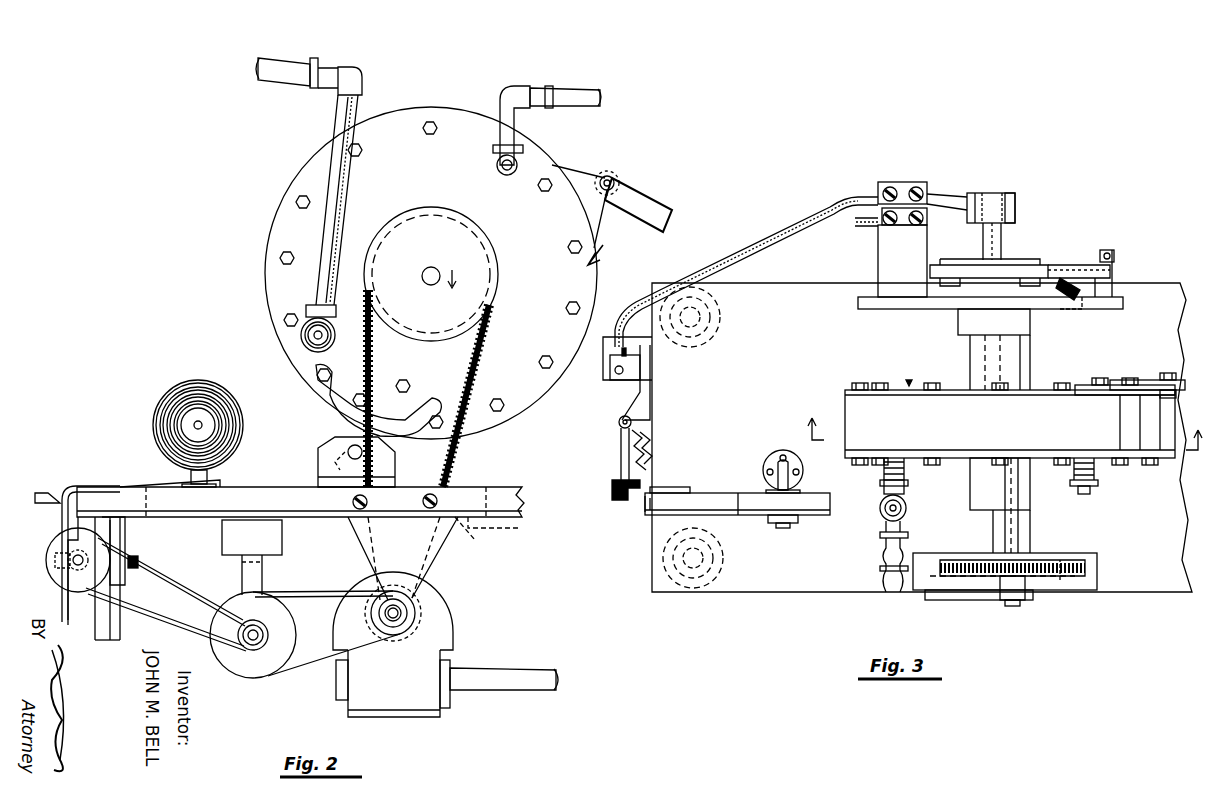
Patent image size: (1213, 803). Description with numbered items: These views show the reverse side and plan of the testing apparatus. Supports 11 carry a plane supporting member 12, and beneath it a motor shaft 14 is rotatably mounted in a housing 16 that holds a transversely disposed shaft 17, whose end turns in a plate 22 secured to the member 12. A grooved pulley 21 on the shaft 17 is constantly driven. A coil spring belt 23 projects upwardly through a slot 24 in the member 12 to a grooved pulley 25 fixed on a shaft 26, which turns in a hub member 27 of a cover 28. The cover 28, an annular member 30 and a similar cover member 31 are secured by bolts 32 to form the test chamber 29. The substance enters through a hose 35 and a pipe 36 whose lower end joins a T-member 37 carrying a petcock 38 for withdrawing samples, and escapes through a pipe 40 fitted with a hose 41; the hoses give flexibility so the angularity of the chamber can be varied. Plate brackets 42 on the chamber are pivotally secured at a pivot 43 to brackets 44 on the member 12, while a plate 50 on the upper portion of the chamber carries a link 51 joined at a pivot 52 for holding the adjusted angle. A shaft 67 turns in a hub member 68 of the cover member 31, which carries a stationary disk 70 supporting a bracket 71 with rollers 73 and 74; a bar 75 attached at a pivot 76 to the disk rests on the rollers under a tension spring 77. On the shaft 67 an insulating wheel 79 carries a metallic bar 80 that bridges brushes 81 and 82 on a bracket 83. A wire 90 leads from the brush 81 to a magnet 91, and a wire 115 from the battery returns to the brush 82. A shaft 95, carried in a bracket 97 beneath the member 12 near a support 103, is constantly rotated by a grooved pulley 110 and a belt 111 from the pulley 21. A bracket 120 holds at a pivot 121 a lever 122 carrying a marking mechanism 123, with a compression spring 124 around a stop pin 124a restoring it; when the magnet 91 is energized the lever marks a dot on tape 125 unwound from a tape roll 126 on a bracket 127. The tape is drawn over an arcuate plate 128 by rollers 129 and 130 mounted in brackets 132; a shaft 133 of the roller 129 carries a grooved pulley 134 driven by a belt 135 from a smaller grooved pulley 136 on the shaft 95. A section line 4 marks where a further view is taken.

In FIG. 3, the section line 4 is at (1003, 422).
In FIG. 2, the supports 11 is at (96, 634).
In FIG. 3, the supports 11 is at (706, 313).
In FIG. 2, the plane supporting member 12 is at (514, 490).
In FIG. 3, the plane supporting member 12 is at (760, 592).
In FIG. 2, the motor shaft 14 is at (472, 672).
In FIG. 2, the housing 16 is at (450, 622).
In FIG. 2, the transversely disposed shaft 17 is at (394, 598).
In FIG. 3, the transversely disposed shaft 17 is at (968, 600).
In FIG. 2, the grooved pulley 21 is at (404, 622).
In FIG. 2, the plate 22 is at (403, 558).
In FIG. 3, the plate 22 is at (930, 600).
In FIG. 2, the coil spring belt 23 is at (452, 458).
In FIG. 3, the coil spring belt 23 is at (1092, 570).
In FIG. 2, the slot 24 is at (487, 533).
In FIG. 3, the slot 24 is at (1096, 560).
In FIG. 2, the grooved pulley 25 is at (431, 274).
In FIG. 3, the grooved pulley 25 is at (1062, 582).
In FIG. 2, the shaft 26 is at (432, 266).
In FIG. 3, the shaft 26 is at (1000, 506).
In FIG. 3, the hub member 27 is at (1030, 500).
In FIG. 2, the cover 28 is at (431, 273).
In FIG. 3, the cover 28 is at (962, 460).
In FIG. 2, the test chamber 29 is at (611, 253).
In FIG. 3, the test chamber 29 is at (909, 384).
In FIG. 3, the annular member 30 is at (1010, 424).
In FIG. 3, the cover member 31 is at (1092, 386).
In FIG. 2, the bolts 32 is at (433, 123).
In FIG. 3, the bolts 32 is at (866, 386).
In FIG. 2, the hose 35 is at (286, 64).
In FIG. 2, the pipe 36 is at (340, 188).
In FIG. 3, the pipe 36 is at (880, 508).
In FIG. 2, the T-member 37 is at (334, 344).
In FIG. 3, the T-member 37 is at (908, 490).
In FIG. 2, the petcock 38 is at (308, 342).
In FIG. 3, the petcock 38 is at (880, 552).
In FIG. 2, the pipe 40 is at (516, 124).
In FIG. 3, the pipe 40 is at (1088, 494).
In FIG. 2, the hose 41 is at (585, 92).
In FIG. 2, the plate brackets 42 is at (322, 422).
In FIG. 2, the pivot 43 is at (346, 452).
In FIG. 2, the brackets 44 is at (318, 472).
In FIG. 2, the plate 50 is at (590, 178).
In FIG. 3, the plate 50 is at (1154, 376).
In FIG. 2, the link 51 is at (648, 204).
In FIG. 3, the link 51 is at (1178, 376).
In FIG. 2, the pivot 52 is at (612, 178).
In FIG. 3, the shaft 67 is at (980, 352).
In FIG. 3, the hub member 68 is at (1032, 357).
In FIG. 3, the disk 70 is at (1124, 303).
In FIG. 3, the bracket 71 is at (1004, 256).
In FIG. 3, the roller 73 is at (938, 264).
In FIG. 3, the roller 74 is at (1050, 264).
In FIG. 3, the bar 75 is at (1072, 266).
In FIG. 3, the pivot 76 is at (1104, 250).
In FIG. 3, the tension spring 77 is at (1070, 309).
In FIG. 3, the wheel 79 is at (1014, 194).
In FIG. 3, the metallic bar 80 is at (996, 194).
In FIG. 3, the brush 81 is at (948, 188).
In FIG. 3, the brush 82 is at (928, 232).
In FIG. 3, the bracket 83 is at (908, 182).
In FIG. 3, the wire 90 is at (750, 250).
In FIG. 3, the magnet 91 is at (612, 378).
In FIG. 2, the shaft 95 is at (255, 648).
In FIG. 2, the bracket 97 is at (262, 578).
In FIG. 2, the support 103 is at (252, 537).
In FIG. 2, the grooved pulley 110 is at (292, 626).
In FIG. 2, the belt 111 is at (326, 592).
In FIG. 3, the wire 115 is at (860, 228).
In FIG. 3, the bracket 120 is at (644, 412).
In FIG. 3, the pivot 121 is at (620, 422).
In FIG. 3, the lever 122 is at (620, 452).
In FIG. 2, the marking mechanism 123 is at (54, 490).
In FIG. 3, the marking mechanism 123 is at (611, 491).
In FIG. 3, the compression spring 124 is at (648, 446).
In FIG. 3, the stop pin 124a is at (652, 462).
In FIG. 2, the tape 125 is at (156, 482).
In FIG. 3, the tape 125 is at (724, 502).
In FIG. 2, the tape roll 126 is at (240, 410).
In FIG. 3, the tape roll 126 is at (762, 510).
In FIG. 2, the bracket 127 is at (208, 474).
In FIG. 3, the bracket 127 is at (786, 458).
In FIG. 2, the arcuate plate 128 is at (78, 486).
In FIG. 3, the arcuate plate 128 is at (650, 518).
In FIG. 2, the roller 129 is at (84, 573).
In FIG. 2, the roller 130 is at (50, 546).
In FIG. 2, the brackets 132 is at (128, 570).
In FIG. 2, the shaft 133 is at (85, 549).
In FIG. 2, the grooved pulley 134 is at (56, 570).
In FIG. 2, the belt 135 is at (160, 570).
In FIG. 2, the smaller grooved pulley 136 is at (260, 624).